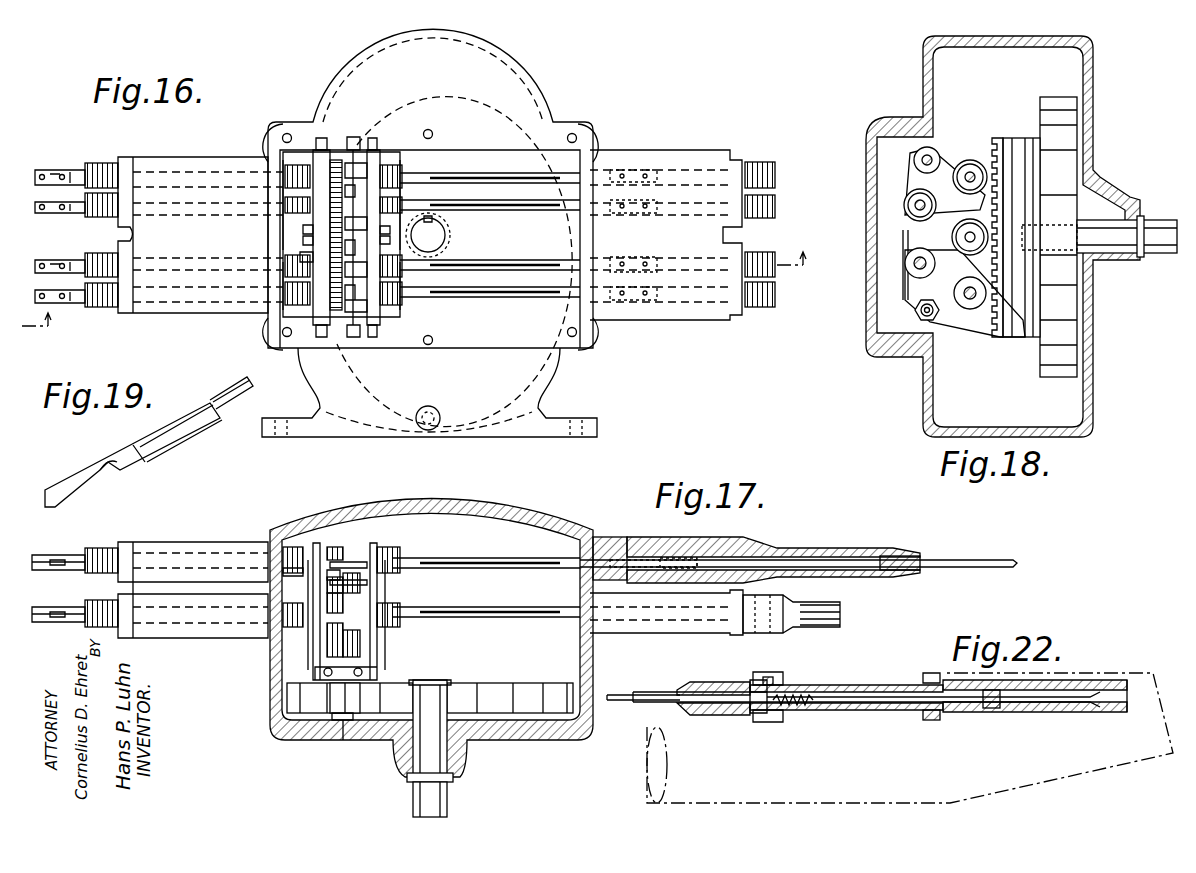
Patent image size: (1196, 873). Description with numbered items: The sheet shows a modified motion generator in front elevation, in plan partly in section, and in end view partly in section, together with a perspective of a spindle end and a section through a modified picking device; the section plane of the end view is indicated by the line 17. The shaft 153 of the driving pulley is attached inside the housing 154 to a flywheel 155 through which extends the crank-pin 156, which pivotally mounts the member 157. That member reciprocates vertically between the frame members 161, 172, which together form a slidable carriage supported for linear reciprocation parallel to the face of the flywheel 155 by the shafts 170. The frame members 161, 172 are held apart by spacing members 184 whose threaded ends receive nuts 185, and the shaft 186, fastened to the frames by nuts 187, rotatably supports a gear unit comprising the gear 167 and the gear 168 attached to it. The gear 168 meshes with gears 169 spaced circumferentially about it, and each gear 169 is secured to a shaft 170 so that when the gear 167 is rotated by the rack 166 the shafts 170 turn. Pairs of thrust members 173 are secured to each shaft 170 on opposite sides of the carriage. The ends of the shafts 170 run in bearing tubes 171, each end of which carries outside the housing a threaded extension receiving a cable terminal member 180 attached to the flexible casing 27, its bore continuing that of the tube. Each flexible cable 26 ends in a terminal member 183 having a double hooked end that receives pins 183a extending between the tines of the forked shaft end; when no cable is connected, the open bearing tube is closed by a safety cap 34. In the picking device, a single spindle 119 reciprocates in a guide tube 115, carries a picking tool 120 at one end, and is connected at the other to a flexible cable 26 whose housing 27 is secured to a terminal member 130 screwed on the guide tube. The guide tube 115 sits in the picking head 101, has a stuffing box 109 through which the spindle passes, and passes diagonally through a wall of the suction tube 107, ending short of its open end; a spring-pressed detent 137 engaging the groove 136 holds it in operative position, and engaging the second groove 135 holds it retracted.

In FIG. 16, the section line 17- 17 is at (415, 279).
In FIG. 19, the flexible cable 26 is at (232, 390).
In FIG. 17, the flexible cable 26 is at (713, 570).
In FIG. 22, the flexible cable 26 is at (615, 694).
In FIG. 17, the flexible casing 27 is at (940, 570).
In FIG. 22, the flexible casing 27 is at (655, 702).
In FIG. 17, the safety cap 34 is at (840, 605).
In FIG. 22, the picking head 101 is at (1087, 673).
In FIG. 22, the suction tube 107 is at (660, 750).
In FIG. 22, the stuffing box 109 is at (997, 708).
In FIG. 22, the guide tube 115 is at (927, 680).
In FIG. 22, the spindle 119 is at (853, 703).
In FIG. 22, the picking tool 120 is at (1073, 705).
In FIG. 22, the terminal member 130 is at (727, 680).
In FIG. 22, the second groove 135 is at (923, 718).
In FIG. 22, the notch or groove 136 is at (768, 715).
In FIG. 22, the spring-pressed detent 137 is at (772, 680).
In FIG. 16, the shaft 153 is at (446, 236).
In FIG. 17, the shaft 153 is at (437, 680).
In FIG. 18, the shaft 153 is at (1163, 253).
In FIG. 16, the housing 154 is at (510, 50).
In FIG. 17, the housing 154 is at (285, 742).
In FIG. 18, the housing 154 is at (923, 52).
In FIG. 16, the flywheel 155 is at (587, 132).
In FIG. 17, the flywheel 155 is at (287, 700).
In FIG. 18, the flywheel 155 is at (1058, 97).
In FIG. 17, the crank-pin 156 is at (345, 720).
In FIG. 18, the crank-pin 156 is at (1052, 245).
In FIG. 17, the member 157 is at (340, 690).
In FIG. 18, the member 157 is at (1012, 138).
In FIG. 16, the frame member 161 is at (335, 152).
In FIG. 17, the frame member 161 is at (330, 560).
In FIG. 18, the frame member 161 is at (910, 170).
In FIG. 16, the rack 166 is at (358, 148).
In FIG. 17, the rack 166 is at (345, 645).
In FIG. 18, the rack 166 is at (995, 138).
In FIG. 16, the gear 167 is at (437, 250).
In FIG. 17, the gear 167 is at (335, 585).
In FIG. 18, the gear 167 is at (952, 225).
In FIG. 16, the gear 168 is at (310, 257).
In FIG. 17, the gear 168 is at (330, 585).
In FIG. 18, the gear 168 is at (945, 227).
In FIG. 17, the gear 169 is at (336, 547).
In FIG. 18, the gear 169 is at (955, 165).
In FIG. 16, the shaft 170 is at (85, 167).
In FIG. 17, the shaft 170 is at (80, 553).
In FIG. 18, the shaft 170 is at (957, 180).
In FIG. 16, the bearing tube 171 is at (108, 163).
In FIG. 17, the bearing tube 171 is at (97, 548).
In FIG. 16, the frame member 172 is at (377, 142).
In FIG. 17, the frame member 172 is at (375, 545).
In FIG. 18, the frame member 172 is at (905, 288).
In FIG. 16, the thrust member 173 is at (283, 170).
In FIG. 17, the thrust member 173 is at (268, 545).
In FIG. 17, the cable terminal member 180 is at (775, 540).
In FIG. 19, the cable terminal member 183 is at (170, 440).
In FIG. 17, the cable terminal member 183 is at (648, 583).
In FIG. 16, the pin 183a is at (58, 202).
In FIG. 17, the pin 183a is at (58, 607).
In FIG. 16, the spacing member 184 is at (352, 137).
In FIG. 17, the spacing member 184 is at (350, 562).
In FIG. 18, the spacing member 184 is at (928, 147).
In FIG. 16, the nut 185 is at (288, 165).
In FIG. 17, the nut 185 is at (283, 573).
In FIG. 18, the nut 185 is at (930, 322).
In FIG. 16, the shaft 186 is at (297, 240).
In FIG. 16, the nut 187 is at (303, 230).